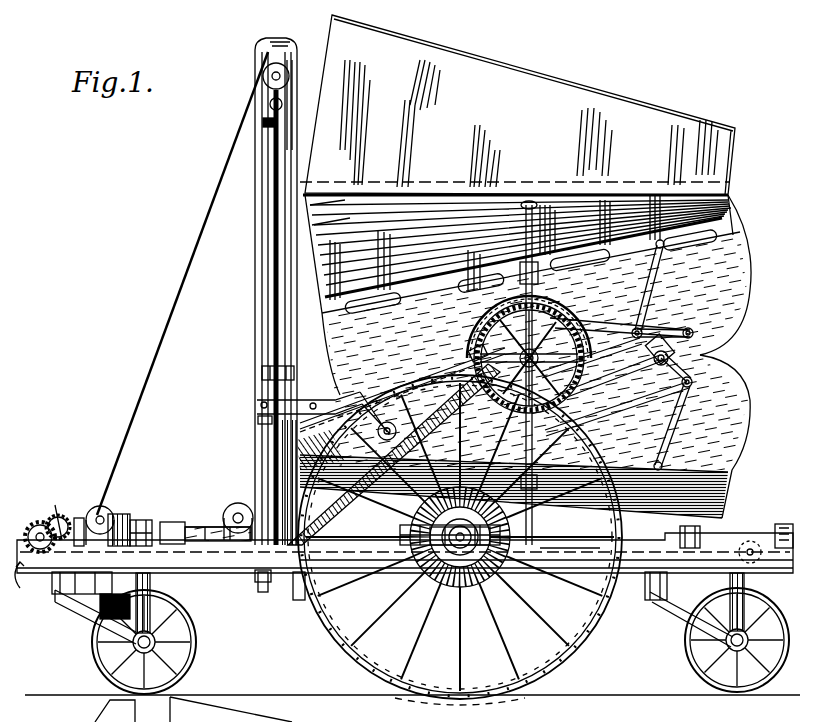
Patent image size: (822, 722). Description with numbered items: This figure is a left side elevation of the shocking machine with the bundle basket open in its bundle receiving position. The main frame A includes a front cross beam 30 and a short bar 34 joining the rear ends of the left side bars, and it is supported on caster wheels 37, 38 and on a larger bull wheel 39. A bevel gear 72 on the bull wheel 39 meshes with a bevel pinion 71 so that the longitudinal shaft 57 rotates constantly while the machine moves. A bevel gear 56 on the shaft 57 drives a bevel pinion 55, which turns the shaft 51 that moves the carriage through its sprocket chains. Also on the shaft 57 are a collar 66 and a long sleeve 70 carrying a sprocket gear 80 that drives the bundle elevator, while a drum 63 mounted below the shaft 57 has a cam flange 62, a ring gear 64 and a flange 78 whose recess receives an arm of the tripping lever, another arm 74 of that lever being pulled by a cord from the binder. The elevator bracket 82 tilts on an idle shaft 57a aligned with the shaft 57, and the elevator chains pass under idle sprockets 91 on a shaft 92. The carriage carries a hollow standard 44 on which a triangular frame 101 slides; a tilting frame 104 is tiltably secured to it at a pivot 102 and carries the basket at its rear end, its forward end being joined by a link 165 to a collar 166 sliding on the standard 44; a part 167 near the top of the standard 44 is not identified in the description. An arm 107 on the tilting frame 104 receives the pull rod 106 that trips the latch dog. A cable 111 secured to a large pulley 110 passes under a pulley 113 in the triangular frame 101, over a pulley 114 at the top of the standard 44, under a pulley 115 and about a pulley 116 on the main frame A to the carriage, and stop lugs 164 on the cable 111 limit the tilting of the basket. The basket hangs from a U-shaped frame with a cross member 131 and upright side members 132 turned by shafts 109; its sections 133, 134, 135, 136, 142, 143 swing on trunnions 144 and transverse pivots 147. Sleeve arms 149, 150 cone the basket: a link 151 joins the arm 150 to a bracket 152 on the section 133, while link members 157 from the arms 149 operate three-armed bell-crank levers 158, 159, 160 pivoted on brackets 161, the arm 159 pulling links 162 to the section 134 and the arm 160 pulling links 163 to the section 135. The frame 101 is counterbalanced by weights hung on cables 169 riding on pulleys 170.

The hollow standard 44 is at (270, 275).
The pulley 114 is at (285, 70).
The pulleys 170 is at (293, 108).
The cables 169 is at (292, 143).
The clamp 167 is at (267, 126).
The pulley 116 is at (97, 516).
The basket section 143 is at (545, 78).
The basket section 133 is at (362, 207).
The bracket 152 is at (552, 217).
The basket section 142 is at (713, 210).
The stop lugs 164 is at (465, 310).
The trunnions 144 is at (608, 268).
The basket section 134 is at (727, 258).
The basket section 135 is at (737, 390).
The basket section 136 is at (727, 488).
The transverse pivots 147 is at (528, 202).
The arm 107 is at (483, 348).
The sleeve arm 149 is at (477, 313).
The pull cord or rod 106 is at (453, 357).
The cable 111 is at (417, 355).
The link 151 is at (583, 322).
The large pulley 110 is at (582, 323).
The links 162 is at (655, 270).
The link members 157 is at (650, 320).
The bell-crank arm 159 is at (660, 323).
The bell-crank arm 158 is at (667, 347).
The bell-crank arm 160 is at (672, 373).
The links 163 is at (665, 448).
The brackets 161 is at (630, 378).
The sleeve arm 150 is at (583, 417).
The shaft 109 is at (577, 366).
The triangular frame 101 is at (257, 403).
The pivot 102 is at (380, 425).
The collar 166 is at (262, 375).
The link 165 is at (273, 440).
The pulley 113 is at (310, 482).
The tilting frame 104 is at (394, 454).
The bull wheel 39 is at (563, 670).
The upright side members 132 is at (567, 427).
The bevel gear 72 is at (452, 592).
The bevel pinion 71 is at (415, 548).
The longitudinally extending shaft 57 is at (355, 533).
The cross member 131 is at (590, 540).
The idle shaft 57a is at (735, 530).
The bracket 82 is at (683, 529).
The short bar 34 is at (790, 522).
The caster wheel 37 is at (193, 658).
The flange 78 is at (135, 650).
The lever arm 74 is at (145, 590).
The cam flange 62 is at (87, 605).
The ring gear 64 is at (113, 607).
The main frame A is at (17, 583).
The caster wheel 38 is at (772, 682).
The shaft 92 is at (630, 577).
The idle sprockets 91 is at (657, 595).
The sprocket gear 80 is at (260, 583).
The shaft 51 is at (33, 528).
The bevel pinion 55 is at (52, 517).
The bevel gear 56 is at (55, 518).
The front cross beam 30 is at (78, 518).
The collar 66 is at (113, 515).
The drum 63 is at (128, 520).
The long sleeve 70 is at (210, 528).
The pulley 115 is at (237, 503).